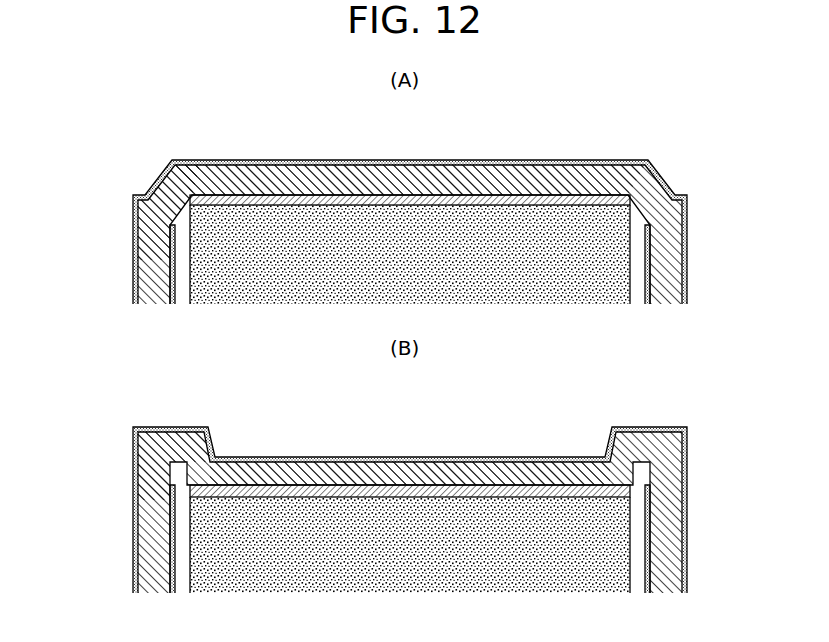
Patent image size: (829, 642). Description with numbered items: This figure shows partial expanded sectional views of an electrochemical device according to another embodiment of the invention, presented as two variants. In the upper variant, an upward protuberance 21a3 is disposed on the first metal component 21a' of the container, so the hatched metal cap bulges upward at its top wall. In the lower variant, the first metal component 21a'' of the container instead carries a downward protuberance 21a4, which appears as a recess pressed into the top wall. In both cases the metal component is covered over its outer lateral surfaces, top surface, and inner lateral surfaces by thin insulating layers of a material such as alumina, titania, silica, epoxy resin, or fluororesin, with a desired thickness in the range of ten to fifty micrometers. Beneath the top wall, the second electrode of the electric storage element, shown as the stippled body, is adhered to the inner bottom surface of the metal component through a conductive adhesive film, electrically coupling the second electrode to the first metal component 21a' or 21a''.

The upward protuberance 21a3 is at (293, 160).
The recessed top wall portion of case 21a4 is at (295, 447).
The first metal component 21a' is at (126, 212).
The first metal component 21a'' is at (131, 466).